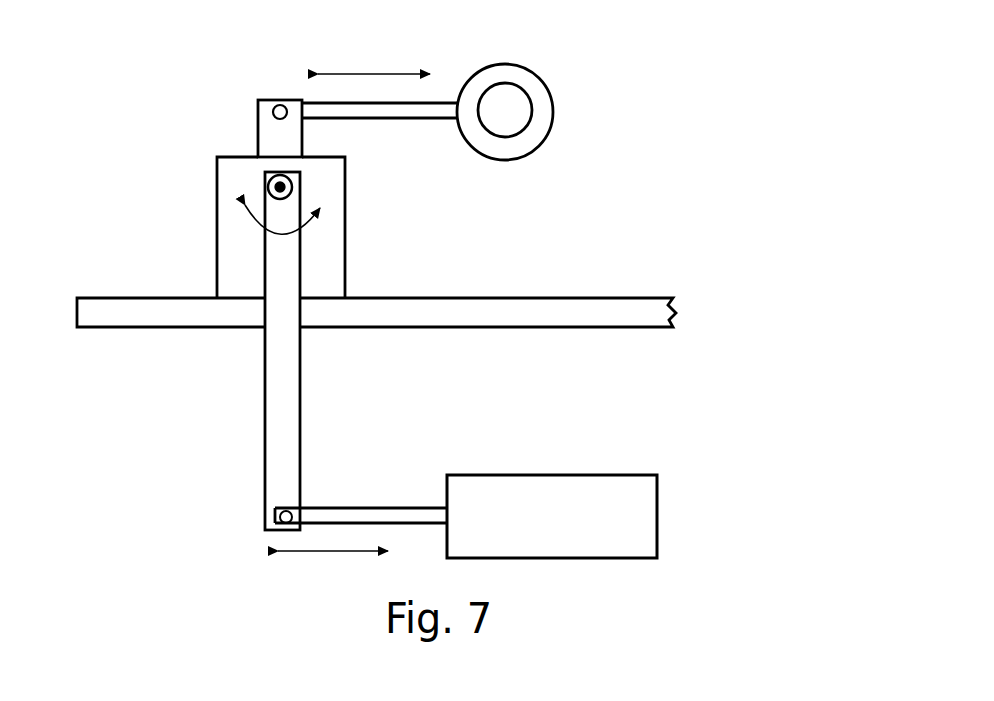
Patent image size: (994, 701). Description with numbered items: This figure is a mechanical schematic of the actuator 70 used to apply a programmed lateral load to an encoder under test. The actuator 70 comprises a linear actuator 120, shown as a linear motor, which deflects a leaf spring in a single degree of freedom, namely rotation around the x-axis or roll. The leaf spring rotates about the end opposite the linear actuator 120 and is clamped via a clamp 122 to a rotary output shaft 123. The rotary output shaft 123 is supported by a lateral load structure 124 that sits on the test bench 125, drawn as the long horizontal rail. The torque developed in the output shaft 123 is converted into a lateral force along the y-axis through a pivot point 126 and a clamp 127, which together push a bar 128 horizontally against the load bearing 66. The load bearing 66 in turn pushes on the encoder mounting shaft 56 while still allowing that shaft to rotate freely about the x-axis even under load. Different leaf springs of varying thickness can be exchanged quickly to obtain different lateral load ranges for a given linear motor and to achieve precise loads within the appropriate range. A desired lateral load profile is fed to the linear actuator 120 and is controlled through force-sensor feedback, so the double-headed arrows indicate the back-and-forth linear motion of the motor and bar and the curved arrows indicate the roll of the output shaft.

The actuator 70 is at (108, 245).
The linear actuator 120 is at (535, 475).
The clamp 122 is at (273, 387).
The rotary output shaft 123 is at (280, 176).
The lateral load structure 124 is at (345, 218).
The test bench 125 is at (587, 298).
The pivot point 126 is at (263, 181).
The clamp 127 is at (235, 83).
The bar 128 is at (400, 120).
The load bearing 66 is at (550, 92).
The encoder mounting shaft 56 is at (503, 112).